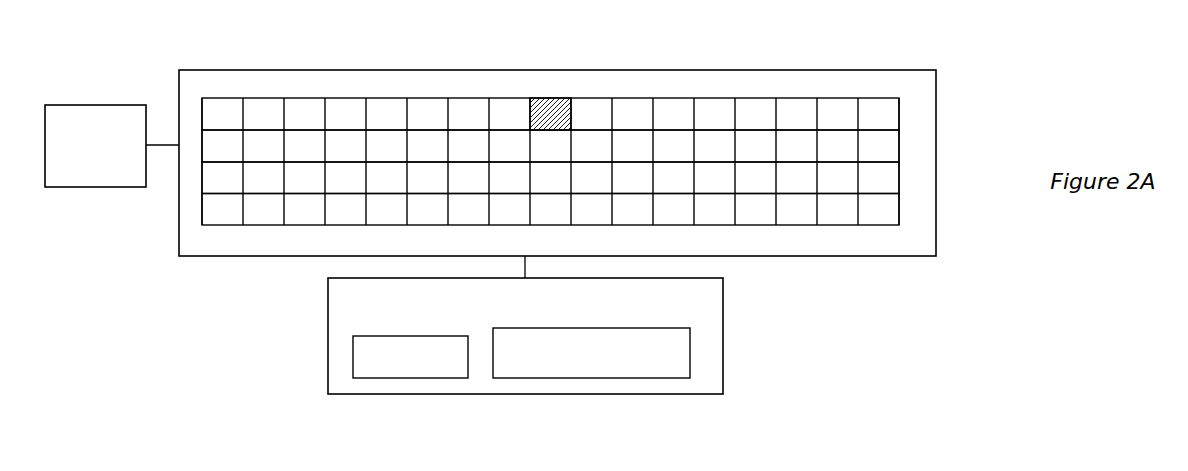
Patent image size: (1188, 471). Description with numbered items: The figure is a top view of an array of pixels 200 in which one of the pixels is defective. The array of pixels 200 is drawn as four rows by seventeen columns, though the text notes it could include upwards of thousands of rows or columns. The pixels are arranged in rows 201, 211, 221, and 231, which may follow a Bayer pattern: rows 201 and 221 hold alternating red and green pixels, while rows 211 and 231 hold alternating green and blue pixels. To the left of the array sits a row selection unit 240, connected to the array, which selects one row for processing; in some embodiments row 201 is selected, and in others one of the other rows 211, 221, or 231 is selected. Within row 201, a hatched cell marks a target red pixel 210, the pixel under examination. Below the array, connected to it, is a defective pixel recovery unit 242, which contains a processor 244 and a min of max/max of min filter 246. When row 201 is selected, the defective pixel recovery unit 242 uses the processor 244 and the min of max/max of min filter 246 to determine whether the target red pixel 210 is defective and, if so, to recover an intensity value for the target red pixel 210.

The array of pixels 200 is at (1125, 151).
The row 201 is at (899, 117).
The row 211 is at (899, 150).
The row 221 is at (899, 182).
The row 231 is at (899, 213).
The target red pixel 210 is at (555, 98).
The row selection unit 240 is at (93, 187).
The defective pixel recovery unit 242 is at (723, 339).
The processor 244 is at (405, 378).
The min of max/max of min filter 246 is at (588, 378).